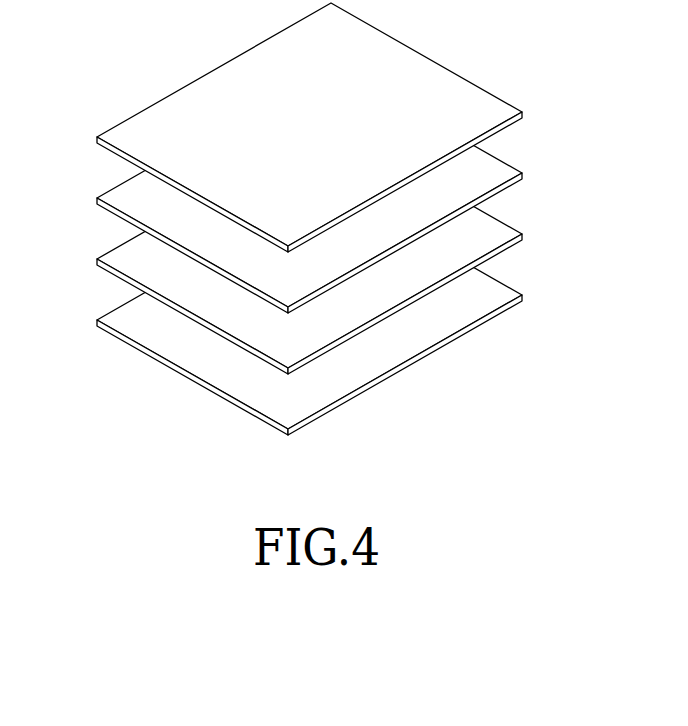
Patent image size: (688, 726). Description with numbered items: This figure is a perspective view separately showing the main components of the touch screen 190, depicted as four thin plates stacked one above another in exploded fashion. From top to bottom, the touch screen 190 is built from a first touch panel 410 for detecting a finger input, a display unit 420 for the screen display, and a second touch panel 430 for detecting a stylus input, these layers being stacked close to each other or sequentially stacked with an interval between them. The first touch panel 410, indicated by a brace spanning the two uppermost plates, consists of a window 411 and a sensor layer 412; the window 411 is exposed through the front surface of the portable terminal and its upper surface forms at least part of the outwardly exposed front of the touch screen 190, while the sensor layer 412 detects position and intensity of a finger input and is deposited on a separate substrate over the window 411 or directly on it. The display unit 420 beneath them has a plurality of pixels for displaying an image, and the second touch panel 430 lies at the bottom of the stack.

The touch screen 190 is at (320, 219).
The first touch panel 410 is at (320, 158).
The window 411 is at (522, 112).
The sensor layer 412 is at (522, 173).
The display unit 420 is at (522, 234).
The second touch panel 430 is at (522, 295).